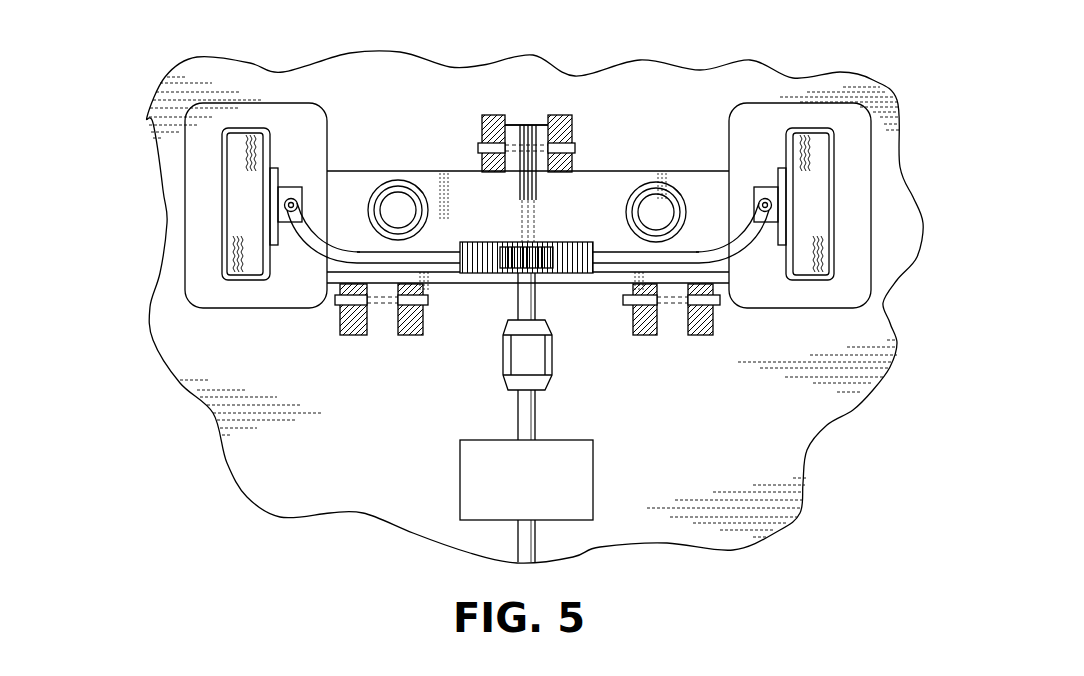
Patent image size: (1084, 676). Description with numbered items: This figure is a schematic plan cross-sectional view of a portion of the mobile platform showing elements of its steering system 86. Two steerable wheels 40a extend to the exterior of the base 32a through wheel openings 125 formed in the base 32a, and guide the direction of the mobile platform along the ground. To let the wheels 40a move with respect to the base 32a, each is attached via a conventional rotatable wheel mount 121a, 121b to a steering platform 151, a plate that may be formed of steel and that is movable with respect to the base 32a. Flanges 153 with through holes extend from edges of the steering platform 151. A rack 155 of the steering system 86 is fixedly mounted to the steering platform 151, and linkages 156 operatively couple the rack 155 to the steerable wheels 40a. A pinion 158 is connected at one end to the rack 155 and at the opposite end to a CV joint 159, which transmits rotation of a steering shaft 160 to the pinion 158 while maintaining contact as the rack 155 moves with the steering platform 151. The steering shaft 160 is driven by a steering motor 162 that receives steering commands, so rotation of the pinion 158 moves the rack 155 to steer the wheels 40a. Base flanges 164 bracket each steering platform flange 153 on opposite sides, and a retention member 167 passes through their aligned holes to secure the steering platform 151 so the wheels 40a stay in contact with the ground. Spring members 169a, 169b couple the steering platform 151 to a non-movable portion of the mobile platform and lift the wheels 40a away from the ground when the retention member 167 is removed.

The base 32a is at (772, 88).
The wheel openings 125 is at (183, 143).
The steerable wheels 40a is at (240, 198).
The rotatable wheel mount 121a is at (292, 198).
The rotatable wheel mount 121b is at (763, 200).
The steering platform 151 is at (704, 274).
The linkages 156 is at (345, 264).
The spring member 169a is at (372, 186).
The spring member 169b is at (637, 190).
The base flanges 164 is at (496, 115).
The retention member 167 is at (335, 298).
The flanges 153 is at (522, 125).
The rack 155 is at (480, 260).
The pinion 158 is at (517, 300).
The steering shaft 160 is at (517, 425).
The CV joint 159 is at (540, 357).
The steering motor 162 is at (593, 487).
The steering system 86 is at (133, 460).